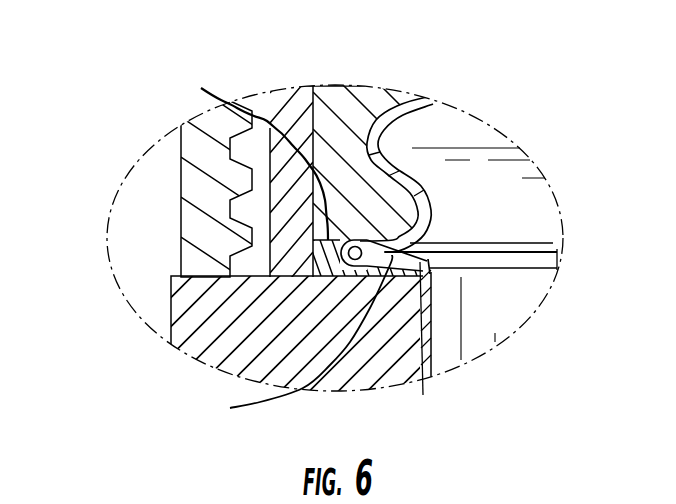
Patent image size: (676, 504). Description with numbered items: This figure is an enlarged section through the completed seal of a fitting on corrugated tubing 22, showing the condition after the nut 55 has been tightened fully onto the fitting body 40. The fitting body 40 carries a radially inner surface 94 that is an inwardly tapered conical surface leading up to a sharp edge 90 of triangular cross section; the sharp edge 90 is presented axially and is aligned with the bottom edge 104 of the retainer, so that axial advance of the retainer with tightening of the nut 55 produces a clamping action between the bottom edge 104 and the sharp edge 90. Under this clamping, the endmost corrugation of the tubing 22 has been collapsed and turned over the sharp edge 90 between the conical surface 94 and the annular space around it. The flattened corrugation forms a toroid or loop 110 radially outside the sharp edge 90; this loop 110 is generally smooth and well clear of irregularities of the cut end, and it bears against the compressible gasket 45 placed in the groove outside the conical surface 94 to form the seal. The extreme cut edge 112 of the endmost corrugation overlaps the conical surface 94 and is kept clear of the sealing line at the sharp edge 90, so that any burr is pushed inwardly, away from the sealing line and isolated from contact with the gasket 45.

The tubing 22 is at (429, 92).
The fitting body 40 is at (205, 342).
The gasket 45 is at (252, 248).
The nut 55 is at (207, 194).
The sharp edge 90 is at (295, 343).
The radially inner surface 94 is at (548, 262).
The bottom edge of the retainer 104 is at (201, 88).
The toroid or loop 110 is at (357, 242).
The extreme cut edge 112 is at (421, 348).